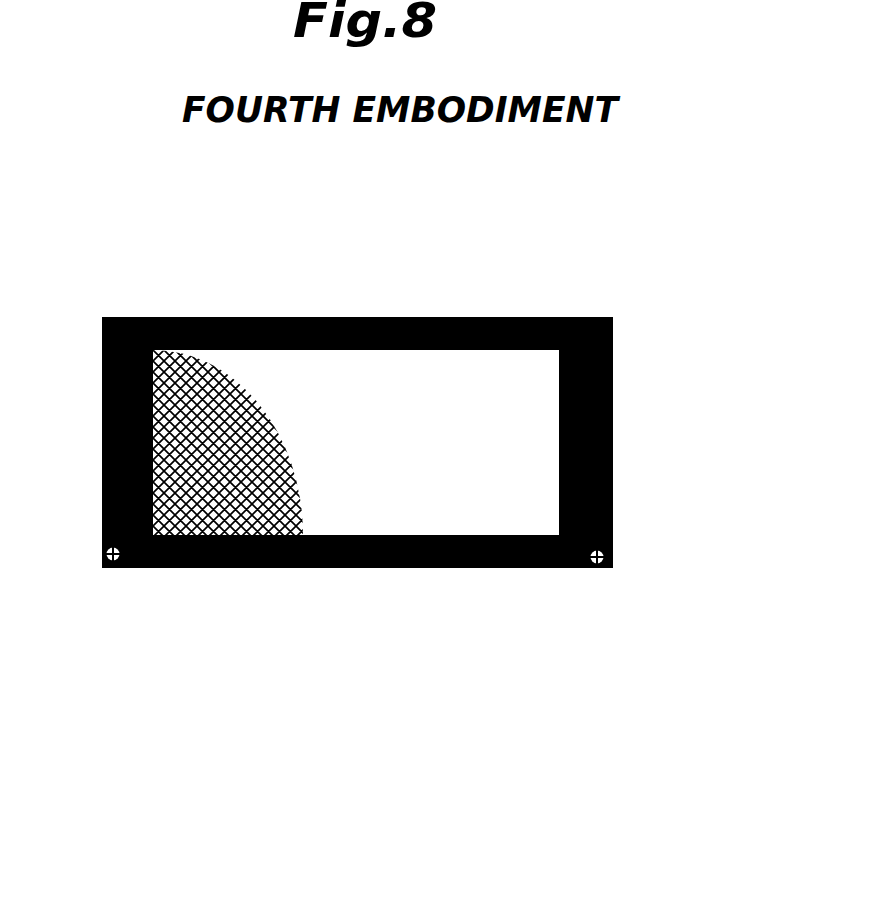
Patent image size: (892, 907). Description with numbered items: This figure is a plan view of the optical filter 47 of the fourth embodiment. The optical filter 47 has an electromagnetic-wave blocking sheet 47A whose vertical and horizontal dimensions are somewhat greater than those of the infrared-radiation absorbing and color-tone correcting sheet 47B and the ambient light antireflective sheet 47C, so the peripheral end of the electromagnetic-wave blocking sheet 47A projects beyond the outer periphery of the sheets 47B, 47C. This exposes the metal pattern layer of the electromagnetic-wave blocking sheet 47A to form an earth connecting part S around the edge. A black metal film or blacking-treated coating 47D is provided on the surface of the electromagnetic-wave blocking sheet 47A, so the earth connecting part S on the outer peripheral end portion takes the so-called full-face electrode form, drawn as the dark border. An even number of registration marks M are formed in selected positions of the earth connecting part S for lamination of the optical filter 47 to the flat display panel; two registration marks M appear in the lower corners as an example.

The optical filter 47 is at (449, 439).
The electromagnetic-wave blocking sheet 47A is at (457, 442).
The infrared-radiation absorbing and color-tone correcting sheet 47B is at (394, 382).
The ambient light antireflective sheet 47C is at (511, 378).
The black metal film or blacking-treated coating 47D is at (612, 427).
The earth connecting part S is at (613, 360).
The registration marks M is at (103, 567).